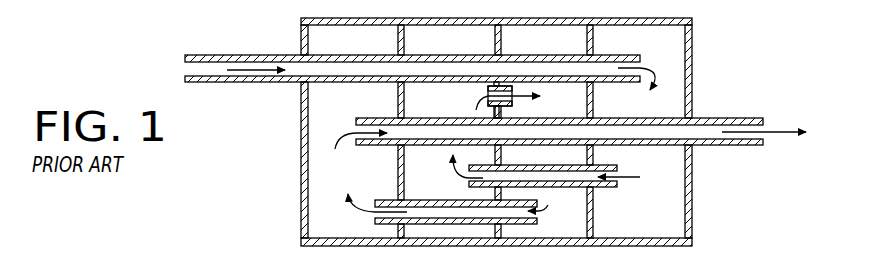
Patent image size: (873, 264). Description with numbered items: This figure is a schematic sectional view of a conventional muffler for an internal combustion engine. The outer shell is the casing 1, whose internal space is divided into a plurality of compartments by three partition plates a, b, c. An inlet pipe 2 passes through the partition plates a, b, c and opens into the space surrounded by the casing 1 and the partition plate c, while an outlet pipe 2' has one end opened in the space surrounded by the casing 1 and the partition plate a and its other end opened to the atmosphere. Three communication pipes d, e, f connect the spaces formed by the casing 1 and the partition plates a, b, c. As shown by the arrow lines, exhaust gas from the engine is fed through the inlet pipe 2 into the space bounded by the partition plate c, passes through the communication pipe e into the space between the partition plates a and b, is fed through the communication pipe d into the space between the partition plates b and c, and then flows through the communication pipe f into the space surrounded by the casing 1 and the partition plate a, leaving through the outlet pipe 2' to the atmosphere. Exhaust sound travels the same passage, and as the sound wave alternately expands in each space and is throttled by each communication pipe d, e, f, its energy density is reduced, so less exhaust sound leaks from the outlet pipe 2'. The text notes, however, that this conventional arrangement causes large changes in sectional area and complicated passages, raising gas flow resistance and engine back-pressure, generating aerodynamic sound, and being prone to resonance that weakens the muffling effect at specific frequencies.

The casing 1 is at (299, 44).
The inlet pipe 2 is at (420, 47).
The outlet pipe 2' is at (570, 110).
The partition plate a is at (404, 41).
The partition plate b is at (501, 42).
The partition plate c is at (593, 40).
The communication pipe d is at (511, 105).
The communication pipe e is at (605, 187).
The communication pipe f is at (530, 224).